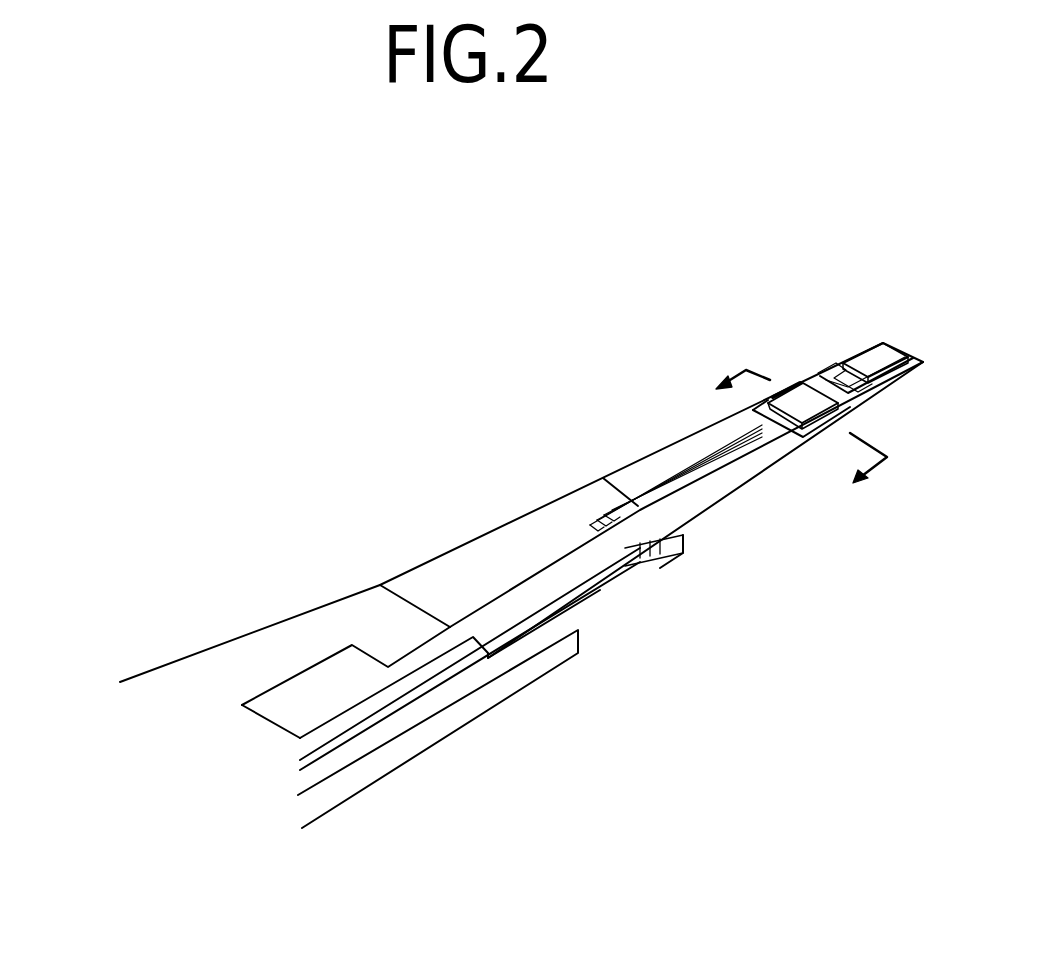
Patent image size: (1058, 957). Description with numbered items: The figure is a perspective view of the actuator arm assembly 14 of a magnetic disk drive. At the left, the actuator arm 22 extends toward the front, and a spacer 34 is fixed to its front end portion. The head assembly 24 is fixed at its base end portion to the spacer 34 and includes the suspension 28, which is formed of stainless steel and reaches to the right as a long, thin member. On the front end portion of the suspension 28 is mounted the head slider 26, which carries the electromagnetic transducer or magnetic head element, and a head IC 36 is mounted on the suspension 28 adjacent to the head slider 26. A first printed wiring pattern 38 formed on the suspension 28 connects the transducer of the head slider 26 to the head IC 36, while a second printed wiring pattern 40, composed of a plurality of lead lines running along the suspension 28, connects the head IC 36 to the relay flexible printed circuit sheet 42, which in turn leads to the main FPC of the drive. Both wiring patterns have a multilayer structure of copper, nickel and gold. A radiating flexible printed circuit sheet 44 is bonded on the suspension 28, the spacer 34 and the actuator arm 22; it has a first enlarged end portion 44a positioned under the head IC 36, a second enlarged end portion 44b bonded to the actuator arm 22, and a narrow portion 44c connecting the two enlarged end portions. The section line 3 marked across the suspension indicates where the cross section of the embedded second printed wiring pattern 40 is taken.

The actuator arm assembly 14 is at (417, 508).
The actuator arm 22 is at (262, 658).
The head assembly 24 is at (694, 433).
The head slider 26 is at (886, 352).
The suspension 28 is at (723, 490).
The spacer 34 is at (503, 553).
The head IC 36 is at (806, 400).
The first printed wiring pattern 38 is at (823, 385).
The second printed wiring pattern 40 is at (672, 486).
The relay flexible printed circuit sheet 42 is at (480, 683).
The radiating flexible printed circuit sheet 44 is at (571, 580).
The first enlarged end portion 44a is at (865, 407).
The second enlarged end portion 44b is at (340, 672).
The narrow portion 44c is at (663, 505).
The section line 3— 3 is at (791, 436).